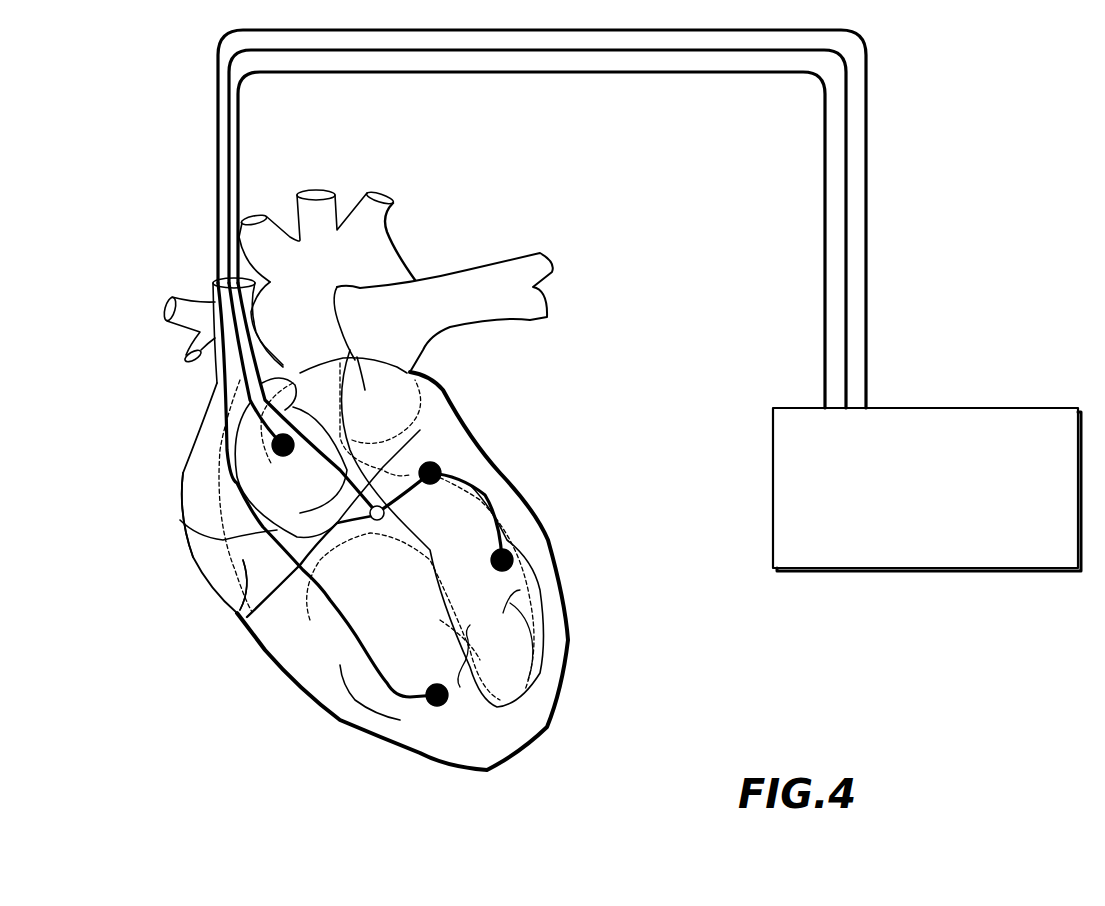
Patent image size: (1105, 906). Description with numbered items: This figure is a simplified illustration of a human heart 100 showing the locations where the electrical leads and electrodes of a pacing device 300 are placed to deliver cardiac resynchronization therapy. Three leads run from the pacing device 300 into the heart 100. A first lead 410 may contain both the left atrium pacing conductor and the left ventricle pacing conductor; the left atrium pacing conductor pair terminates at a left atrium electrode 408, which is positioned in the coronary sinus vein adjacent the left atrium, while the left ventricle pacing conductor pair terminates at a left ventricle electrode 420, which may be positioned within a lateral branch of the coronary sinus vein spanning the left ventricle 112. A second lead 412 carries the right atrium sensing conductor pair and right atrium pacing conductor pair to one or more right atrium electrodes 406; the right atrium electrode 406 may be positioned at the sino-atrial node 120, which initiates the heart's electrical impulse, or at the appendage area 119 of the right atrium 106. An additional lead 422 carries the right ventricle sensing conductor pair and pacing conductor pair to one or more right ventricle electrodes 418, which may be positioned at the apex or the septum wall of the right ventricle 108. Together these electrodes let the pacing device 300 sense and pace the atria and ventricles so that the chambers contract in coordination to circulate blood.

The heart 100 is at (455, 795).
The right atrium 106 is at (255, 557).
The right ventricle 108 is at (360, 672).
The left ventricle 112 is at (503, 613).
The appendage area 119 is at (167, 547).
The sino-atrial node 120 is at (253, 408).
The pacing device 300 is at (995, 407).
The right atrium electrode 406 is at (270, 457).
The left atrium electrode 408 is at (435, 470).
The lead 410 is at (846, 224).
The lead 412 is at (825, 273).
The right ventricle electrode 418 is at (437, 713).
The left ventricle electrode 420 is at (505, 555).
The lead 422 is at (866, 272).